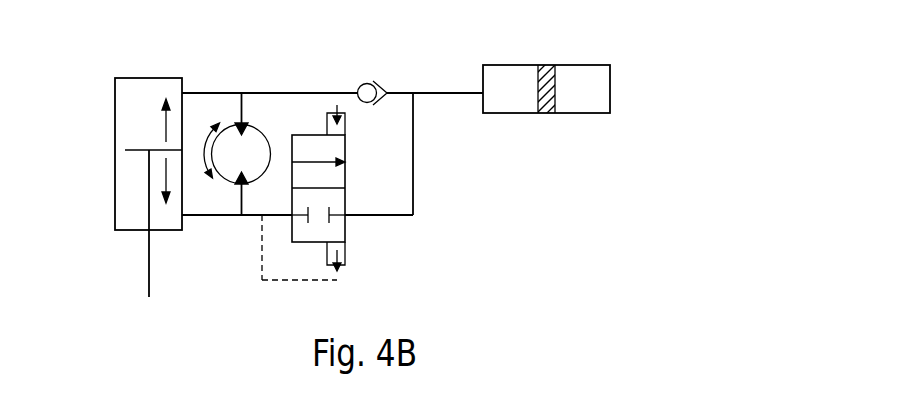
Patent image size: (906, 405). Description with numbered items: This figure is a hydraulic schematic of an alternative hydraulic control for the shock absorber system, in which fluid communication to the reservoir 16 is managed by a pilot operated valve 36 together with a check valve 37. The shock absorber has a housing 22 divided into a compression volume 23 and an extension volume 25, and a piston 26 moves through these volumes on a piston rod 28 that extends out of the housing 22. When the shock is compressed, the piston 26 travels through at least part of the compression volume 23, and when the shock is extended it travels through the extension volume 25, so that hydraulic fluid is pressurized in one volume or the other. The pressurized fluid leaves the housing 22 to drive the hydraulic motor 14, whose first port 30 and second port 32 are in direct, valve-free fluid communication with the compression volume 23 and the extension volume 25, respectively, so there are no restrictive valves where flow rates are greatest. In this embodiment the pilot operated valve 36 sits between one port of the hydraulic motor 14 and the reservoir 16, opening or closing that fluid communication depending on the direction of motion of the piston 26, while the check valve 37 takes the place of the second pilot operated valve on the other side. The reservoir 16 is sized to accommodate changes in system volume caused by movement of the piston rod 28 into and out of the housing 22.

The hydraulic motor 14 is at (237, 124).
The reservoir 16 is at (503, 107).
The housing 22 is at (115, 89).
The compression volume 23 is at (161, 146).
The extension volume 25 is at (143, 203).
The piston 26 is at (134, 150).
The piston rod 28 is at (152, 230).
The first port 30 is at (246, 123).
The second port 32 is at (247, 183).
The pilot operated valve 36 is at (347, 208).
The check valve 37 is at (364, 84).